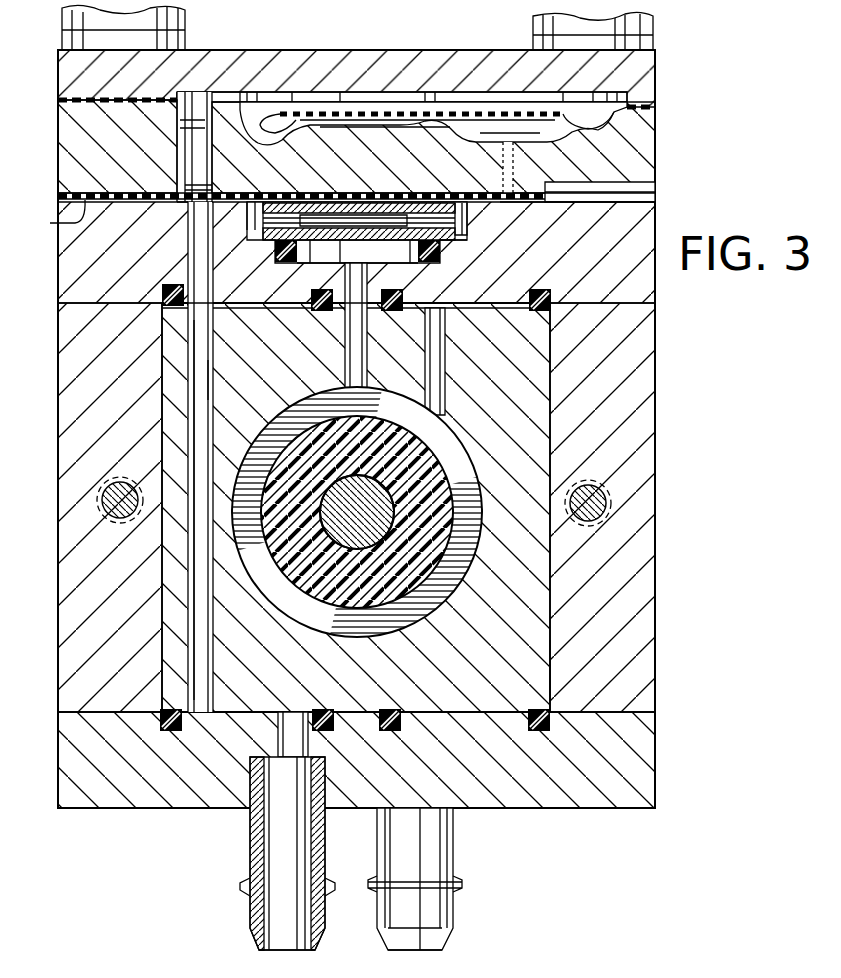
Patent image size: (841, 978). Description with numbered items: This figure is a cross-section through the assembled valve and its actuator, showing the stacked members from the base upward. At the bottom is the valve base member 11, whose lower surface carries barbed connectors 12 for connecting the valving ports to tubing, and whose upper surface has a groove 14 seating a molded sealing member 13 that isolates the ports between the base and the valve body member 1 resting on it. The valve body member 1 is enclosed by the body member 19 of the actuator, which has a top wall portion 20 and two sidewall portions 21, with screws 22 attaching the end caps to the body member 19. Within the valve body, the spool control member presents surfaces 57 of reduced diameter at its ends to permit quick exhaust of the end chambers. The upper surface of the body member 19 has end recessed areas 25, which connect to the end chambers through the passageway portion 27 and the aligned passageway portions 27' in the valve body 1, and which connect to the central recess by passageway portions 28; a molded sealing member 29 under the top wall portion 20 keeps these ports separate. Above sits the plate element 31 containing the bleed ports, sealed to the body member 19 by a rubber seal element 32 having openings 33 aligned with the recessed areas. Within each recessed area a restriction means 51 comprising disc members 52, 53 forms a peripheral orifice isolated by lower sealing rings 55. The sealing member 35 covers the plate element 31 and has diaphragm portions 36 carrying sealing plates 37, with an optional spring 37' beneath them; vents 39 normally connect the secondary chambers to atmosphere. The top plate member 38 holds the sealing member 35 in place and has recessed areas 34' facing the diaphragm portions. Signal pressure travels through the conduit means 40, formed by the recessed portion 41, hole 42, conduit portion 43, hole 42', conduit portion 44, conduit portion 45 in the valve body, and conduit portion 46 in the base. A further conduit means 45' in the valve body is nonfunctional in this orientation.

The valve body member 1 is at (551, 669).
The valve base member 11 is at (657, 757).
The barbed connectors 12 is at (263, 852).
The molded sealing member 13 is at (166, 706).
The groove 14 is at (175, 732).
The body member 19 is at (656, 330).
The top wall portion 20 is at (508, 306).
The sidewall portions 21 is at (66, 617).
The screws 22 is at (104, 503).
The end recessed areas 25 is at (322, 186).
The passageway portion 27 is at (356, 283).
The passageway portions 27' is at (335, 327).
The passageway portions 28 is at (368, 202).
The molded sealing member 29 is at (540, 288).
The plate element 31 is at (657, 143).
The rubber seal element 32 is at (54, 217).
The openings 33 is at (420, 202).
The recessed areas 34' is at (402, 61).
The sealing member 35 is at (110, 100).
The diaphragm portions 36 is at (500, 110).
The sealing plates 37 is at (437, 99).
The spring 37' is at (522, 167).
The top plate member 38 is at (657, 68).
The vents 39 is at (660, 192).
The conduit means 40 is at (210, 380).
The recessed portion 41 is at (205, 92).
The hole 42 is at (176, 124).
The hole 42' is at (228, 170).
The conduit portion 43 is at (193, 162).
The conduit portion 44 is at (205, 243).
The conduit portion 45 is at (224, 510).
The conduit means 45' is at (457, 361).
The conduit portion 46 is at (284, 738).
The restriction means 51 is at (452, 238).
The disc member 52 is at (432, 205).
The disc member 53 is at (276, 250).
The lower sealing rings 55 is at (303, 278).
The surfaces of reduced diameter 57 is at (440, 460).